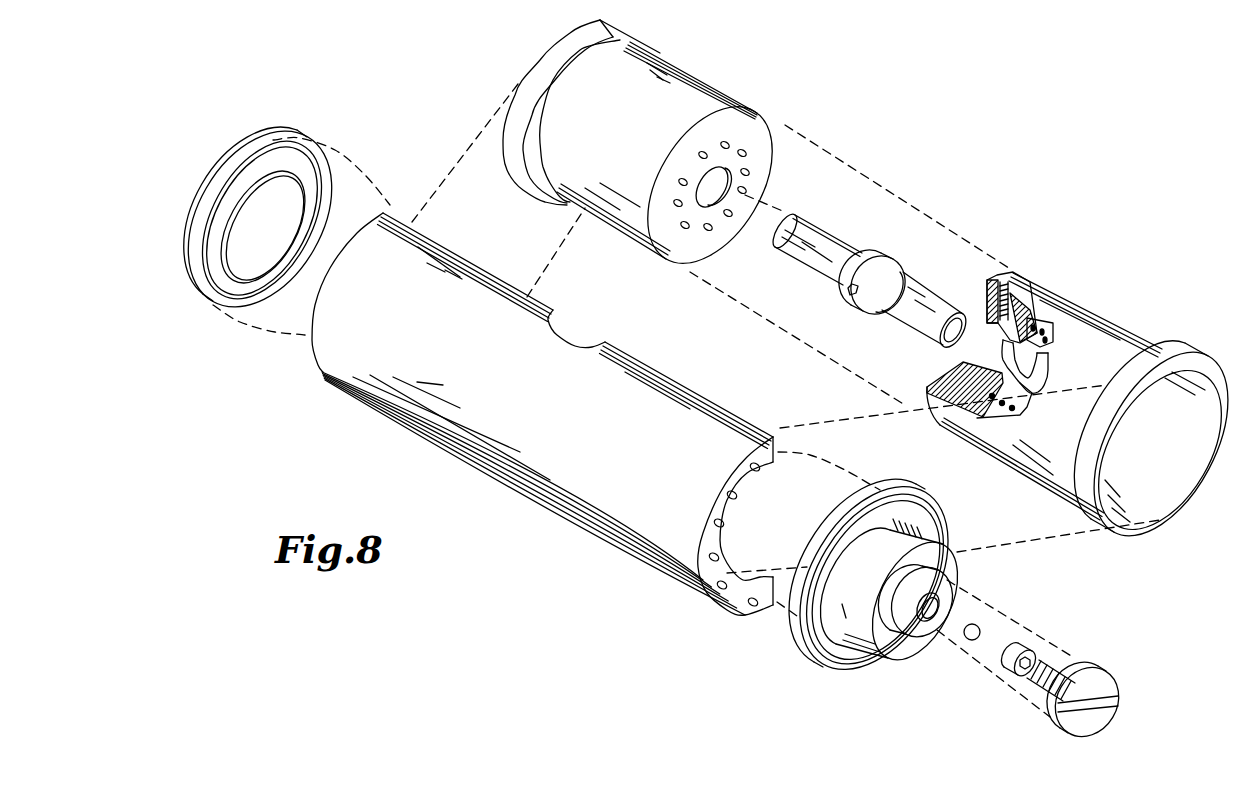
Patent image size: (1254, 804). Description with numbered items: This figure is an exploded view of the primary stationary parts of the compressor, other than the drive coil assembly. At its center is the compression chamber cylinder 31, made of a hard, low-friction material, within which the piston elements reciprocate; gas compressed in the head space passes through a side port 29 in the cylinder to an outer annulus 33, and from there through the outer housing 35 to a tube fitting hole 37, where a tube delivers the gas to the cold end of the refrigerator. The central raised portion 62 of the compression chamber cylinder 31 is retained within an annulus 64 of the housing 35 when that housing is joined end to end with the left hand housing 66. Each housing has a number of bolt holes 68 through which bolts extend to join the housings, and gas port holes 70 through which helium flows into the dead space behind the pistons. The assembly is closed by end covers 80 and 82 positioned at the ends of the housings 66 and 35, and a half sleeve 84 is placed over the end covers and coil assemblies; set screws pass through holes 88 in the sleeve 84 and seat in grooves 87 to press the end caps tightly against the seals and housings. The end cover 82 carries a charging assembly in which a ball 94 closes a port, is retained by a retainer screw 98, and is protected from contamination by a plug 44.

The side port 29 is at (846, 291).
The compression chamber cylinder 31 is at (923, 303).
The outer annulus 33 is at (878, 262).
The outer housing 35 is at (1047, 315).
The tube fitting hole 37 is at (1020, 275).
The plug 44 is at (1083, 670).
The central raised portion 62 is at (883, 316).
The annulus 64 is at (1008, 363).
The left hand housing 66 is at (707, 103).
The bolt holes 68 is at (725, 142).
The gas port holes 70 is at (746, 171).
The end cover 80 is at (213, 300).
The end cover 82 is at (867, 657).
The half sleeve 84 is at (653, 547).
The groove 87 is at (833, 665).
The holes 88 is at (737, 497).
The ball 94 is at (975, 628).
The retainer screw 98 is at (1010, 673).